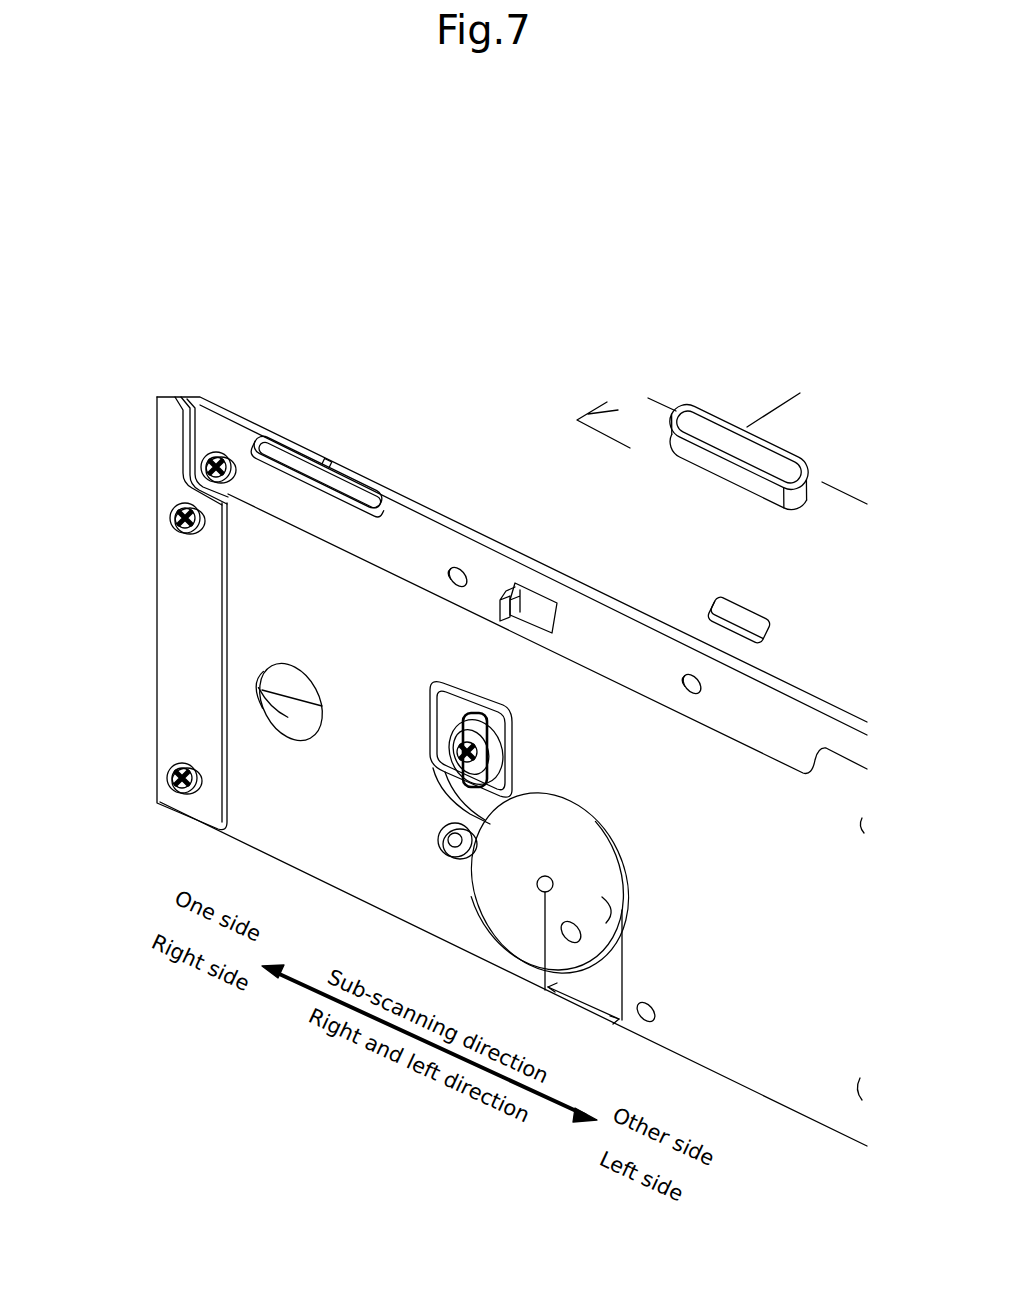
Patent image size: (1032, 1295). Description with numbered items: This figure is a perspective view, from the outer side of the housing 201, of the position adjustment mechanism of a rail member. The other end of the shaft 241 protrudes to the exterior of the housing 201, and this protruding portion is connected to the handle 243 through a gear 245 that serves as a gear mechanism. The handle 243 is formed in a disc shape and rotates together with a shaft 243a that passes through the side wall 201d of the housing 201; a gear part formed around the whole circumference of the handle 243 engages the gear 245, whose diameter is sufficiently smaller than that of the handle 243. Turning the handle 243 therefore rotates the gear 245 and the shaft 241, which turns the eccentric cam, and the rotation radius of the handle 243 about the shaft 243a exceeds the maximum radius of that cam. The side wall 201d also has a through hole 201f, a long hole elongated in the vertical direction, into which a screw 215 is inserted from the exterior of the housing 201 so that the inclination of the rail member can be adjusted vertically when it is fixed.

The housing 201 is at (462, 746).
The side wall 201d is at (257, 588).
The through hole 201f is at (486, 722).
The screw 215 is at (455, 740).
The shaft 241 is at (462, 837).
The gear 245 is at (440, 830).
The handle 243 is at (588, 882).
The shaft 243a is at (550, 882).